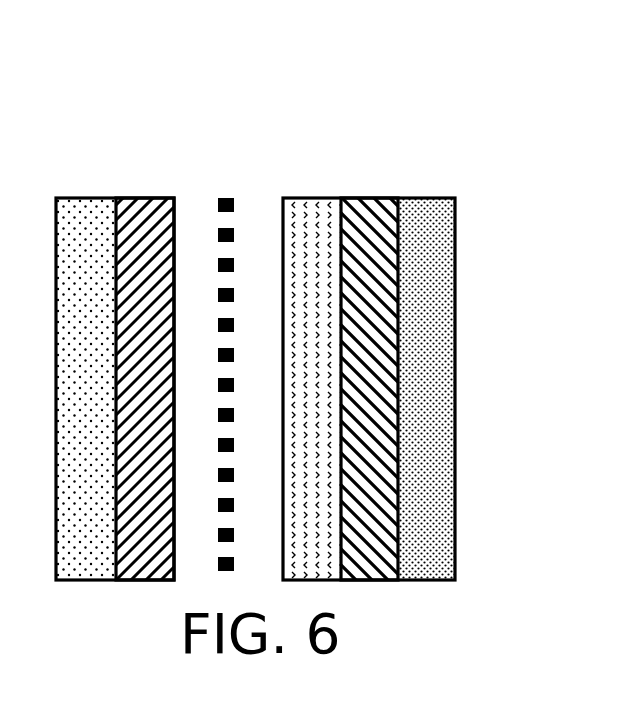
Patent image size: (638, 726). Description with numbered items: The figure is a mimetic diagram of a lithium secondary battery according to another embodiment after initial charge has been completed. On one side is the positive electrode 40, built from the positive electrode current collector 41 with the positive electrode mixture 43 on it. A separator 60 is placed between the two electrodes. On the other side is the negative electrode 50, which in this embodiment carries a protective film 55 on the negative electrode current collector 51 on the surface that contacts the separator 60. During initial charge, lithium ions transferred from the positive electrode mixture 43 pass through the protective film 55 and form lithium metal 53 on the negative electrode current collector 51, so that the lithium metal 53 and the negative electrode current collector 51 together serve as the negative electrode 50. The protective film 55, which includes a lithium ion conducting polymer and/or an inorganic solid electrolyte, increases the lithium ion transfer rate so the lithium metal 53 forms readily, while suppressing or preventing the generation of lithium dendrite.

The positive electrode 40 is at (92, 58).
The positive electrode current collector 41 is at (90, 197).
The positive electrode mixture 43 is at (145, 197).
The negative electrode 50 is at (320, 60).
The negative electrode current collector 51 is at (427, 196).
The lithium metal 53 is at (372, 196).
The protective film 55 is at (316, 196).
The separator 60 is at (225, 197).